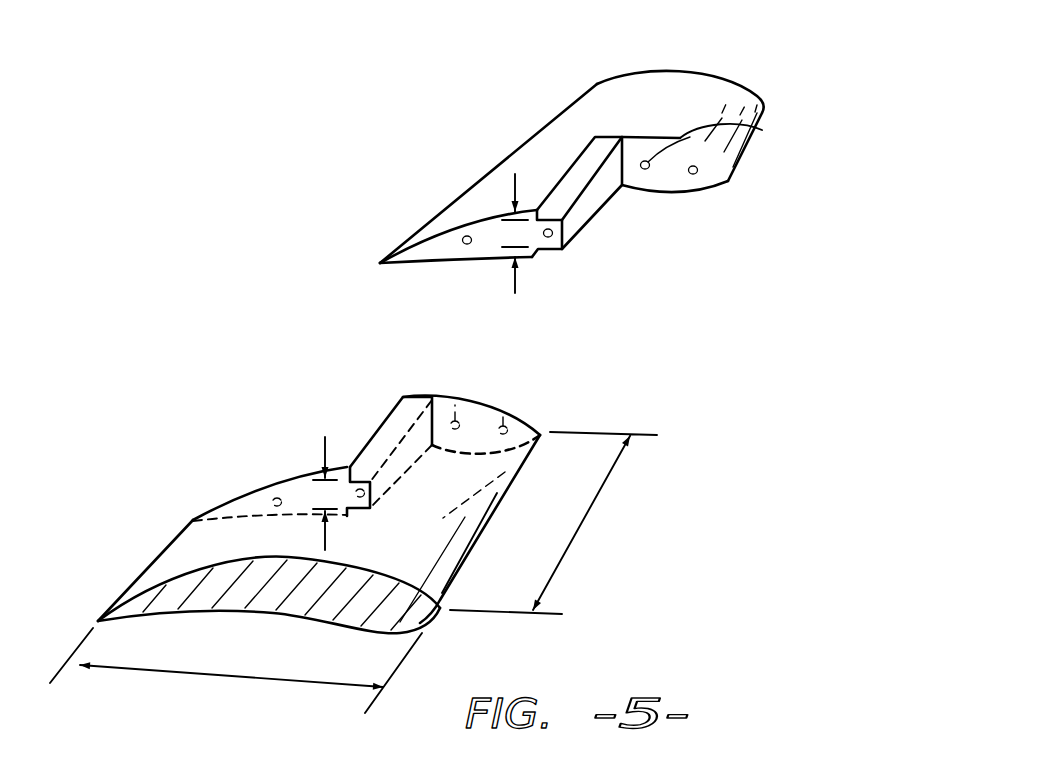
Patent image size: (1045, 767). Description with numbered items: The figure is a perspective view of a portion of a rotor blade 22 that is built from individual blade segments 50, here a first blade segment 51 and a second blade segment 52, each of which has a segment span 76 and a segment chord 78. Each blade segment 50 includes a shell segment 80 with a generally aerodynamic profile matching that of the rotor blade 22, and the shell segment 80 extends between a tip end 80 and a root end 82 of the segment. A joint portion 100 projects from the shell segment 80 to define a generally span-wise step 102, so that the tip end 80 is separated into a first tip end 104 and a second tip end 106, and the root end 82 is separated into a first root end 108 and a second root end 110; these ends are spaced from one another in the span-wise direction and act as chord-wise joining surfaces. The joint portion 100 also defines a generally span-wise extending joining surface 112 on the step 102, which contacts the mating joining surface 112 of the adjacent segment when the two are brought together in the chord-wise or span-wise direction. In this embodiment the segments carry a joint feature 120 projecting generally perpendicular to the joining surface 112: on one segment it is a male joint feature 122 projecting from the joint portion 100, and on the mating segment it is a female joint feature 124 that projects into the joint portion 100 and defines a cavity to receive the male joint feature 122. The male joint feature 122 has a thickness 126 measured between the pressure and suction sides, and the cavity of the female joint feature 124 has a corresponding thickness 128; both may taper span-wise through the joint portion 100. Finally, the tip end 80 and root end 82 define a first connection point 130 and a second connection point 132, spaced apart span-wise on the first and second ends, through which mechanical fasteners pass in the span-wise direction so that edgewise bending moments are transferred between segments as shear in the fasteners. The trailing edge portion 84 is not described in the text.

The rotor blade 22 is at (248, 192).
The blade segment 50 is at (447, 128).
The first blade segment 51 is at (583, 100).
The second blade segment 52 is at (183, 553).
The segment span 76 is at (578, 530).
The segment chord 78 is at (188, 677).
The shell segment 80 is at (717, 77).
The root end 82 is at (447, 240).
The trailing edge portion 84 is at (667, 88).
The joint portion 100 is at (477, 182).
The span-wise step 102 is at (597, 150).
The first tip end 104 is at (487, 398).
The second tip end 106 is at (236, 496).
The first root end 108 is at (423, 250).
The second root end 110 is at (675, 190).
The joining surface 112 is at (593, 197).
The joint feature 120 is at (582, 158).
The male joint feature 122 is at (570, 195).
The female joint feature 124 is at (425, 436).
The thickness of the male joint feature 126 is at (518, 281).
The thickness of the cavity 128 is at (325, 449).
The first connection point 130 is at (466, 244).
The second connection point 132 is at (762, 130).